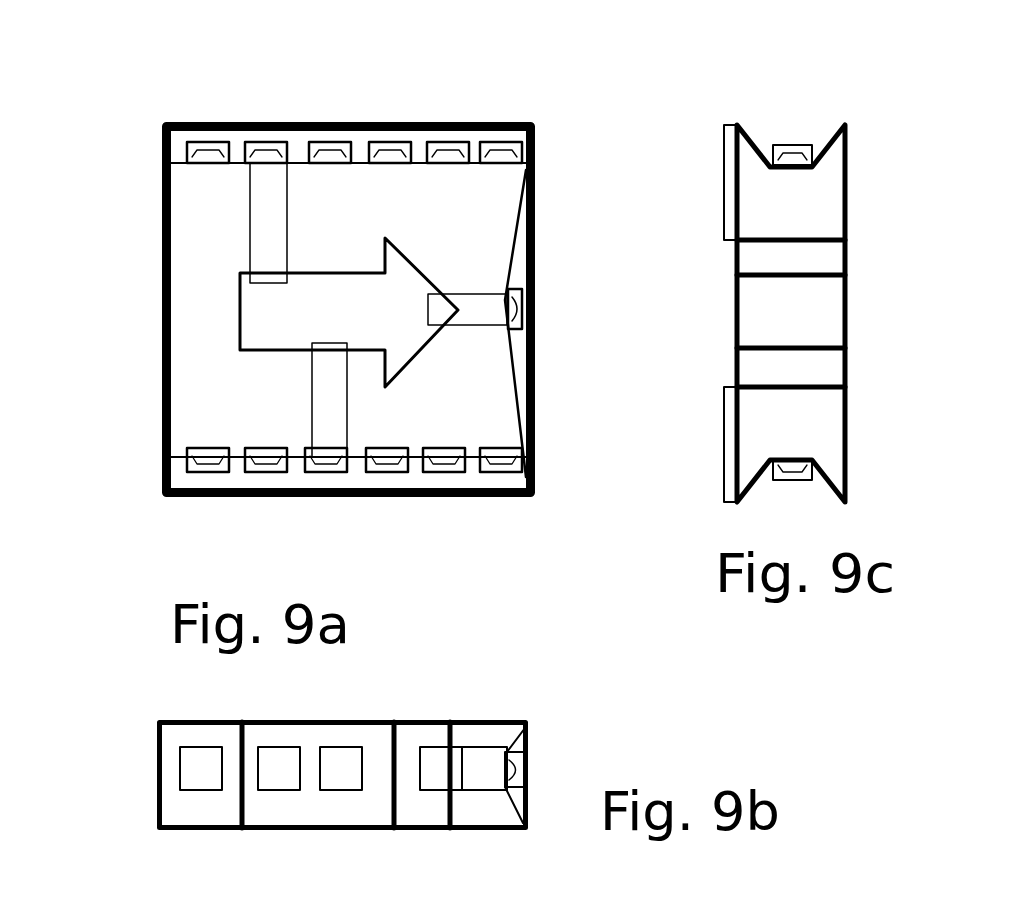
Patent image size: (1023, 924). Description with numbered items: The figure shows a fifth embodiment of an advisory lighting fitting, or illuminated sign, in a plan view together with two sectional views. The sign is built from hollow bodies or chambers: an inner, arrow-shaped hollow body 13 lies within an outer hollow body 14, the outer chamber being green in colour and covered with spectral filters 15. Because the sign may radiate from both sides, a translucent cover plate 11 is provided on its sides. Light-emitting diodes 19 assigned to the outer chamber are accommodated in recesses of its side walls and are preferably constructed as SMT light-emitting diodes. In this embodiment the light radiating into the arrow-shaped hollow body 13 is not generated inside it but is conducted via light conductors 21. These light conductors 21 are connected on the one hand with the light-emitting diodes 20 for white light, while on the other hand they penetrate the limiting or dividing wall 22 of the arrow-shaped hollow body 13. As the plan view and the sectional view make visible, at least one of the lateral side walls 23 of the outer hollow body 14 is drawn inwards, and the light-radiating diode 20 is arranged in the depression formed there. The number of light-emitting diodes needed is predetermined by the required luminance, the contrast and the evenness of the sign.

In FIG. 9C, the translucent cover plate 11 is at (736, 315).
In FIG. 9A, the arrow-shaped hollow body 13 is at (274, 328).
In FIG. 9C, the arrow-shaped hollow body 13 is at (818, 320).
In FIG. 9A, the outer hollow body 14 is at (207, 222).
In FIG. 9B, the outer hollow body 14 is at (343, 775).
In FIG. 9C, the outer hollow body 14 is at (818, 208).
In FIG. 9C, the spectral filter 15 is at (728, 185).
In FIG. 9A, the light-emitting diode 19 is at (388, 150).
In FIG. 9B, the light-emitting diode 19 is at (195, 780).
In FIG. 9C, the light-emitting diode 19 is at (800, 145).
In FIG. 9A, the light-emitting diode for white light 20 is at (263, 150).
In FIG. 9B, the light-emitting diode for white light 20 is at (272, 762).
In FIG. 9A, the light conductor 21 is at (268, 235).
In FIG. 9B, the light conductor 21 is at (467, 767).
In FIG. 9A, the dividing wall 22 is at (353, 273).
In FIG. 9A, the lateral side wall 23 is at (535, 240).
In FIG. 9B, the lateral side wall 23 is at (530, 797).